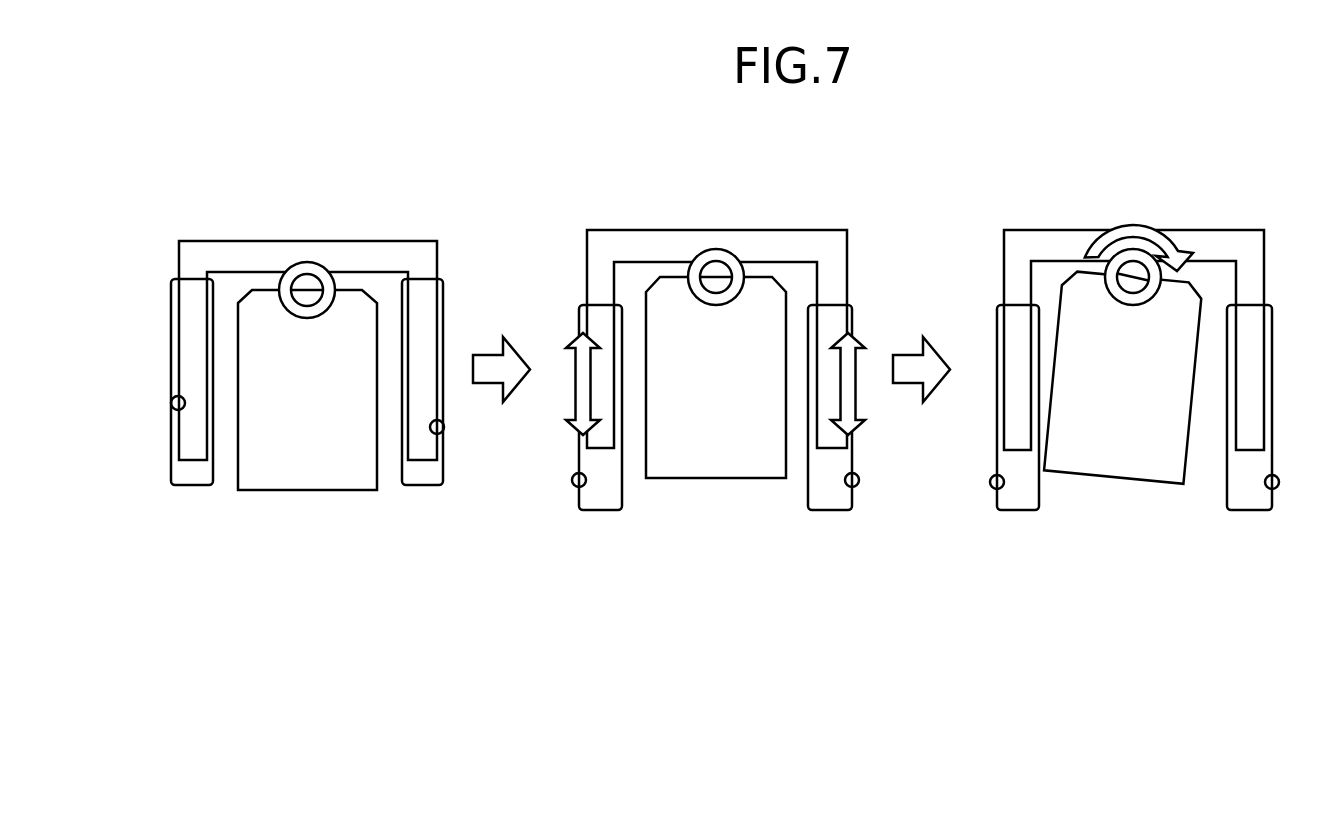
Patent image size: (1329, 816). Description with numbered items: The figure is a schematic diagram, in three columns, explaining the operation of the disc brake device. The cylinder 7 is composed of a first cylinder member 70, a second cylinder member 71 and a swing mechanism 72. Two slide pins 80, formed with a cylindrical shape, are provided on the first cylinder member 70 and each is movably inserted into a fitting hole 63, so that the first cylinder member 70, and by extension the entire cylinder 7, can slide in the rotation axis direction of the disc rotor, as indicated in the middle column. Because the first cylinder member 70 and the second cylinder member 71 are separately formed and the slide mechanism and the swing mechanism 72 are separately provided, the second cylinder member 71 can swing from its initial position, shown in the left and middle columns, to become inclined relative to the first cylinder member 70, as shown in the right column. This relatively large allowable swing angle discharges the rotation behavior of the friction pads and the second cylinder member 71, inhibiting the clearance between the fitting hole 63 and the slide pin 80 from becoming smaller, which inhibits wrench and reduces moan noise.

The cylinder 7 is at (721, 305).
The first cylinder member 70 is at (347, 240).
The second cylinder member 71 is at (362, 317).
The swing mechanism 72 is at (427, 182).
The slide pin 80 is at (193, 322).
The fitting hole 63 is at (172, 408).